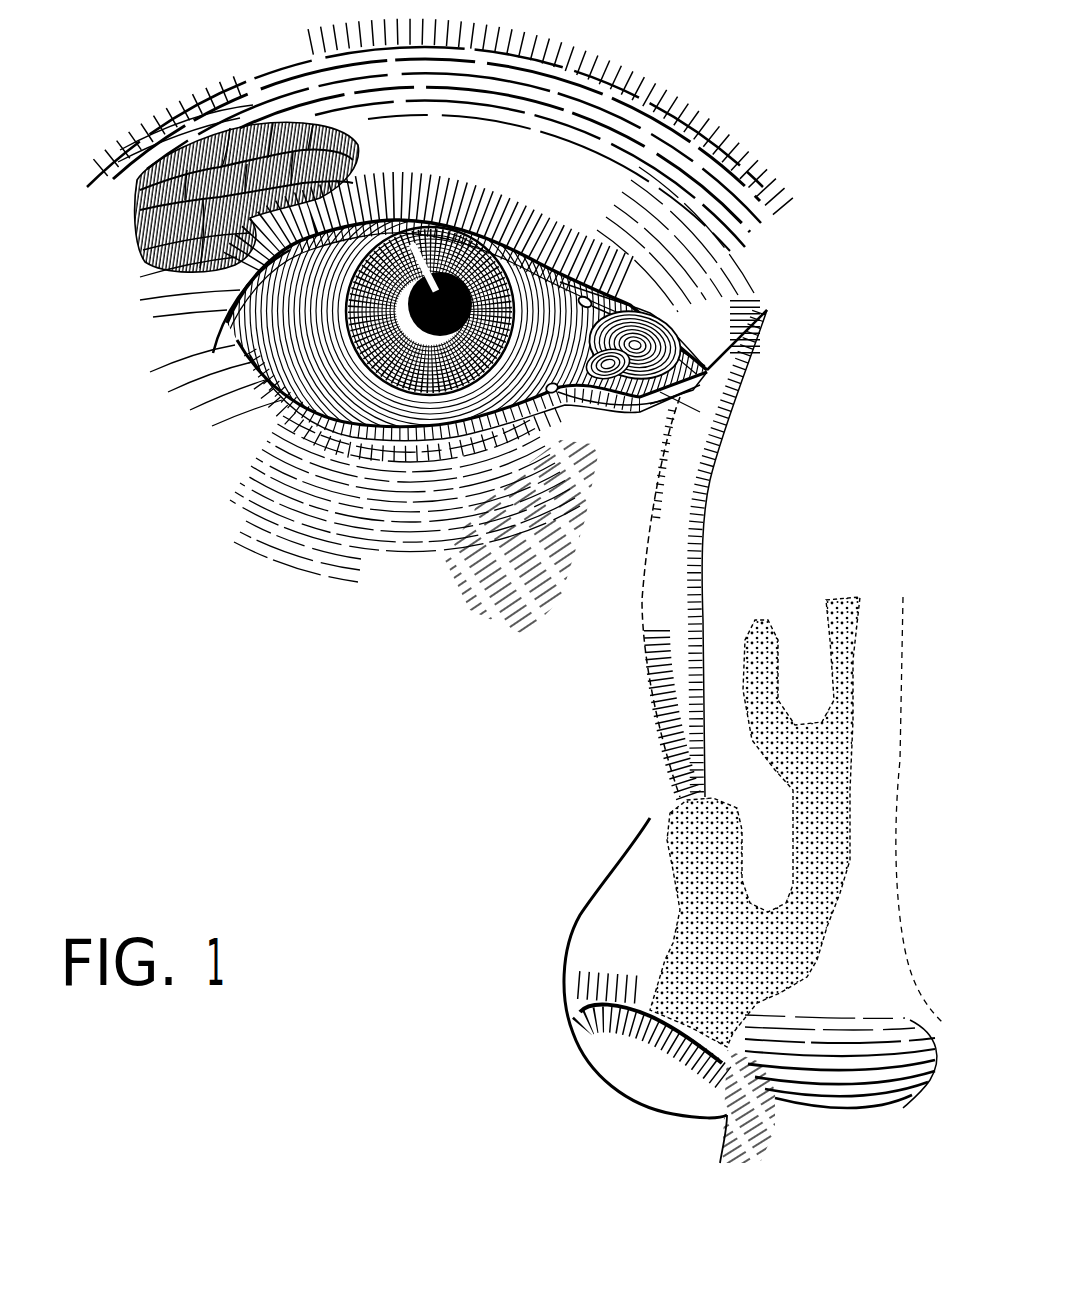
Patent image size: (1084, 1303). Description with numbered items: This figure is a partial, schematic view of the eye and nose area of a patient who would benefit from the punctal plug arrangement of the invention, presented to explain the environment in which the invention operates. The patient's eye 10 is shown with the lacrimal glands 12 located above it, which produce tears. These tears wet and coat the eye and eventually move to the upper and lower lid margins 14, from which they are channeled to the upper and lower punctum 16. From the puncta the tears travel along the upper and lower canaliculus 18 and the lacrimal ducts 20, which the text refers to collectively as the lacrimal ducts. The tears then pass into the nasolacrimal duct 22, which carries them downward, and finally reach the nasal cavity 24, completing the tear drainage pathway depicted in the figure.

The eye 10 is at (258, 378).
The lacrimal glands 12 is at (183, 244).
The upper and lower lid margins 14 is at (410, 458).
The upper and lower punctum 16 is at (545, 398).
The upper and lower canaliculus 18 is at (565, 415).
The lacrimal ducts 20 is at (637, 407).
The nasolacrimal duct 22 is at (670, 630).
The nasal cavity 24 is at (707, 873).